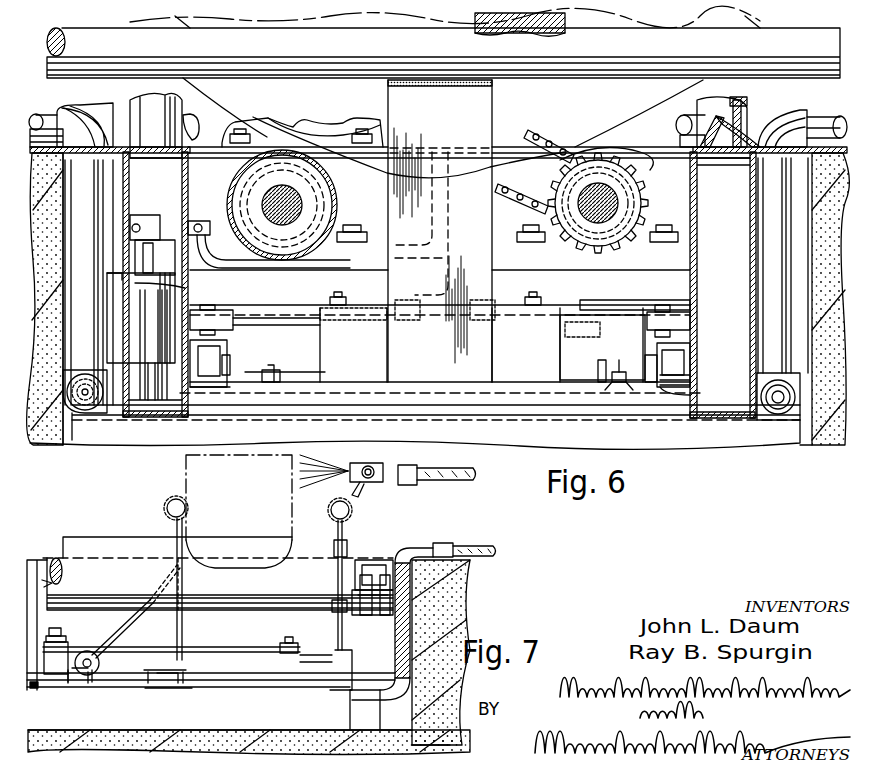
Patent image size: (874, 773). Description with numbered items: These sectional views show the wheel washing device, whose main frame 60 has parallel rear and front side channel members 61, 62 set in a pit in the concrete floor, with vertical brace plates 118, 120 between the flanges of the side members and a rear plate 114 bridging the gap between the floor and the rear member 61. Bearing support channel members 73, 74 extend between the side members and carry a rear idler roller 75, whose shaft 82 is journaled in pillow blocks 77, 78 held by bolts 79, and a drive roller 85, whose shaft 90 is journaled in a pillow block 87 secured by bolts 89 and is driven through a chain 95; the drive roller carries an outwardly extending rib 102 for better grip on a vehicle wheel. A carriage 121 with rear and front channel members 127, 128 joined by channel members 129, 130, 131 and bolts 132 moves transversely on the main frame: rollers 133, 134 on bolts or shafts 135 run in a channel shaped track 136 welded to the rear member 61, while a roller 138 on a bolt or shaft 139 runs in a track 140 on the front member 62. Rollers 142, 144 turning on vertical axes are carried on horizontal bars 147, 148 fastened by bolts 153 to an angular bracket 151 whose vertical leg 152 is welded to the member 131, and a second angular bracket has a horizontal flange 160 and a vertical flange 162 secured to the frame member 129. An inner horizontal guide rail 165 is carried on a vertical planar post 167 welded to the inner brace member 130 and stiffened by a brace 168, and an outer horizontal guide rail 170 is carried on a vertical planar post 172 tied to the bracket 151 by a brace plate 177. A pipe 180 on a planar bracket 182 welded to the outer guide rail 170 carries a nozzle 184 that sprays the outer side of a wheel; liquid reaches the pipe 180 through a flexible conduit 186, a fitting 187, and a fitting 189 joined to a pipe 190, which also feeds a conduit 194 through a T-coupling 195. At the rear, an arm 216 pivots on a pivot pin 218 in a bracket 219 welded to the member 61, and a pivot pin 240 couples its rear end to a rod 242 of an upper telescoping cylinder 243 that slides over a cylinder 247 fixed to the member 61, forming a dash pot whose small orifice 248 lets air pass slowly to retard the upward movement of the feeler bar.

In FIG. 6, the main frame 60 is at (780, 450).
In FIG. 6, the rear side channel member 61 is at (185, 180).
In FIG. 6, the front side channel member 62 is at (698, 263).
In FIG. 6, the bearing support channel member 73 is at (697, 228).
In FIG. 7, the bearing support channel member 74 is at (355, 600).
In FIG. 6, the rear idler roller 75 is at (305, 252).
In FIG. 6, the pillow block 77 is at (362, 232).
In FIG. 7, the pillow block 78 is at (366, 575).
In FIG. 7, the bolts 79 is at (388, 575).
In FIG. 6, the shaft 82 is at (285, 222).
In FIG. 7, the shaft 82 is at (355, 570).
In FIG. 6, the drive roller 85 is at (575, 252).
In FIG. 6, the pillow block 87 is at (672, 232).
In FIG. 6, the bolts 89 is at (515, 230).
In FIG. 6, the shaft 90 is at (618, 232).
In FIG. 6, the chain 95 is at (538, 132).
In FIG. 6, the rib 102 is at (665, 143).
In FIG. 6, the rear plate 114 is at (758, 125).
In FIG. 6, the vertical brace plate 118 is at (128, 172).
In FIG. 6, the vertical plate 120 is at (748, 178).
In FIG. 7, the vertical plate 120 is at (400, 552).
In FIG. 6, the carriage 121 is at (660, 410).
In FIG. 7, the carriage 121 is at (150, 683).
In FIG. 6, the rear channel member 127 is at (282, 375).
In FIG. 7, the rear channel member 127 is at (245, 655).
In FIG. 6, the front channel member 128 is at (602, 360).
In FIG. 7, the channel member 129 is at (95, 683).
In FIG. 7, the channel member 130 is at (188, 683).
In FIG. 6, the channel member 131 is at (575, 412).
In FIG. 7, the channel member 131 is at (220, 710).
In FIG. 6, the bolts 132 is at (275, 368).
In FIG. 7, the bolts 132 is at (170, 683).
In FIG. 7, the roller 133 is at (98, 652).
In FIG. 6, the roller 134 is at (225, 350).
In FIG. 7, the roller 134 is at (330, 680).
In FIG. 6, the bolts or shafts 135 is at (232, 365).
In FIG. 6, the channel shaped track 136 is at (200, 388).
In FIG. 6, the roller 138 is at (690, 348).
In FIG. 6, the bolts or shafts 139 is at (648, 356).
In FIG. 6, the channel shaped track 140 is at (698, 393).
In FIG. 6, the roller 142 is at (690, 316).
In FIG. 6, the roller 144 is at (235, 318).
In FIG. 6, the horizontal bar 147 is at (605, 292).
In FIG. 6, the horizontal bar 148 is at (282, 322).
In FIG. 6, the angular bracket 151 is at (575, 330).
In FIG. 6, the vertical leg 152 is at (558, 358).
In FIG. 7, the vertical leg 152 is at (302, 668).
In FIG. 6, the bolts 153 is at (342, 301).
In FIG. 7, the horizontal flange 160 is at (68, 640).
In FIG. 7, the vertical flange 162 is at (45, 696).
In FIG. 7, the inner horizontal guide rail 165 is at (165, 510).
In FIG. 7, the vertical planar post 167 is at (183, 622).
In FIG. 7, the brace 168 is at (120, 633).
In FIG. 6, the outer horizontal guide rail 170 is at (350, 72).
In FIG. 7, the outer horizontal guide rail 170 is at (330, 515).
In FIG. 6, the vertical planar post 172 is at (487, 268).
In FIG. 7, the vertical planar post 172 is at (333, 546).
In FIG. 7, the brace plate 177 is at (286, 640).
In FIG. 7, the pipe 180 is at (372, 483).
In FIG. 7, the planar bracket 182 is at (352, 488).
In FIG. 7, the nozzle 184 is at (348, 465).
In FIG. 7, the flexible conduit 186 is at (475, 545).
In FIG. 7, the fitting 187 is at (408, 466).
In FIG. 7, the fitting 189 is at (448, 543).
In FIG. 6, the pipe 190 is at (780, 412).
In FIG. 6, the conduit 194 is at (822, 120).
In FIG. 6, the T-coupling 195 is at (762, 375).
In FIG. 6, the arm 216 is at (245, 275).
In FIG. 6, the pivot pin 218 is at (192, 226).
In FIG. 6, the bracket 219 is at (192, 225).
In FIG. 6, the pivot pin 240 is at (136, 224).
In FIG. 6, the rod 242 is at (150, 258).
In FIG. 6, the upper telescoping cylinder 243 is at (115, 300).
In FIG. 6, the cylinder 247 is at (140, 375).
In FIG. 6, the orifice 248 is at (180, 287).